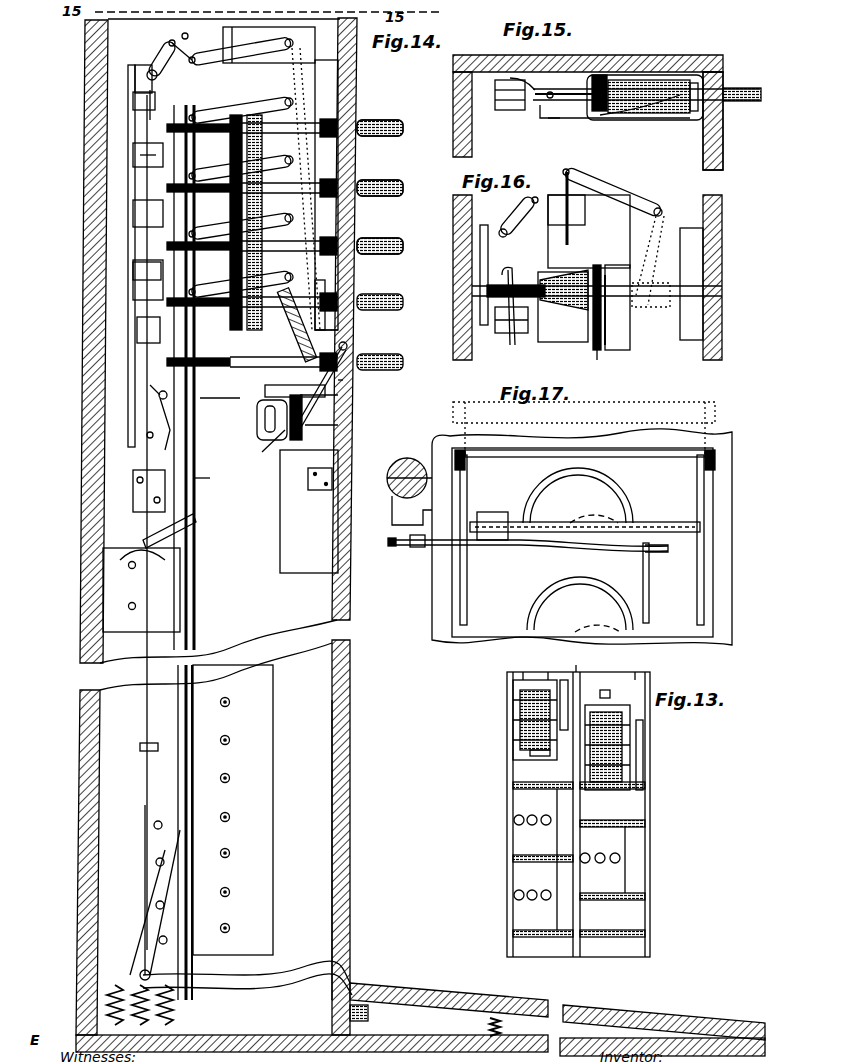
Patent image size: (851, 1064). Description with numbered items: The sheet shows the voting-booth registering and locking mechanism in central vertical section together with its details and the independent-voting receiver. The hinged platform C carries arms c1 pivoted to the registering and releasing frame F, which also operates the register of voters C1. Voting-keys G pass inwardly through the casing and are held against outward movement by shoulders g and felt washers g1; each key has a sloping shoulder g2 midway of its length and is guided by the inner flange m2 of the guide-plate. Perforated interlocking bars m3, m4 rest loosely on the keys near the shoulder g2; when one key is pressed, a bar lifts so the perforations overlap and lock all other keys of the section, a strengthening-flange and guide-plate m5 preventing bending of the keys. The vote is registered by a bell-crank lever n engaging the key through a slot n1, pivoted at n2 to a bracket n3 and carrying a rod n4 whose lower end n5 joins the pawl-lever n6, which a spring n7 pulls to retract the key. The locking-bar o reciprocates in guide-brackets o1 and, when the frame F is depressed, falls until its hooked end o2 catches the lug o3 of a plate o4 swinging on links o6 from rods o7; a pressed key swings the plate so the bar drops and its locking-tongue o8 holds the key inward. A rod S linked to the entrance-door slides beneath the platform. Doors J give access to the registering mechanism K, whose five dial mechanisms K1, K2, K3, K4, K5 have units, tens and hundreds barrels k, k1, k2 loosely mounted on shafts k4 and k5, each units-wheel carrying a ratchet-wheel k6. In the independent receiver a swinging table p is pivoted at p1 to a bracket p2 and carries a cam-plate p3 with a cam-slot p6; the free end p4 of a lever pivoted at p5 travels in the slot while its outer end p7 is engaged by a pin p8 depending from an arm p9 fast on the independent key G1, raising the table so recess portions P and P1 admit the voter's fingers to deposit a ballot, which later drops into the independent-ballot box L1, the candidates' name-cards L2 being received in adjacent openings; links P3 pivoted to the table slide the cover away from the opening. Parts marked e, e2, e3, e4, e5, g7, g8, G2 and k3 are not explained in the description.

In FIG. 14, the locking-bar o is at (130, 195).
In FIG. 14, the guide-brackets o1 is at (133, 155).
In FIG. 14, the hooked upper end of locking-bar o2 is at (150, 398).
In FIG. 16, the hooked upper end of locking-bar o2 is at (520, 280).
In FIG. 14, the lug of plate o3 is at (133, 100).
In FIG. 14, the plate o4 is at (130, 275).
In FIG. 15, the plate o4 is at (493, 95).
In FIG. 16, the plate o4 is at (480, 258).
In FIG. 14, the links o6 is at (158, 60).
In FIG. 15, the links o6 is at (512, 75).
In FIG. 16, the links o6 is at (511, 216).
In FIG. 14, the rods o7 is at (185, 38).
In FIG. 14, the locking-tongue o8 is at (162, 421).
In FIG. 14, the bell-crank lever n is at (241, 167).
In FIG. 16, the bell-crank lever n is at (612, 191).
In FIG. 14, the slot n1 is at (296, 343).
In FIG. 15, the slot n1 is at (700, 90).
In FIG. 14, the pivot of bell-crank lever n2 is at (306, 180).
In FIG. 16, the pivot of bell-crank lever n2 is at (662, 205).
In FIG. 14, the bracket n3 is at (345, 285).
In FIG. 15, the bracket n3 is at (680, 122).
In FIG. 16, the bracket n3 is at (595, 355).
In FIG. 14, the rod n4 is at (222, 438).
In FIG. 16, the rod n4 is at (568, 240).
In FIG. 14, the lower end of rod n5 is at (219, 402).
In FIG. 14, the pawl-lever n6 is at (140, 858).
In FIG. 14, the spring n7 is at (128, 972).
In FIG. 14, the inner flange m2 is at (242, 105).
In FIG. 14, the interlocking bar m3 is at (197, 377).
In FIG. 16, the interlocking bar m4 is at (610, 345).
In FIG. 16, the strengthening-flange and guide-plate m5 is at (630, 318).
In FIG. 14, the shoulders g is at (358, 110).
In FIG. 15, the shoulders g is at (646, 68).
In FIG. 14, the washers g1 is at (358, 165).
In FIG. 15, the washers g1 is at (744, 75).
In FIG. 15, the sloping shoulder g2 is at (625, 88).
In FIG. 14, the block g7 is at (368, 1017).
In FIG. 15, the hook g8 is at (545, 110).
In FIG. 16, the hook g8 is at (505, 272).
In FIG. 14, the voting-keys G is at (395, 118).
In FIG. 15, the voting-keys G is at (736, 119).
In FIG. 17, the independent voting-key G1 is at (405, 458).
In FIG. 14, the rod G2 is at (395, 365).
In FIG. 14, the independent-ballot box L1 is at (309, 511).
In FIG. 14, the candidates' name-cards L2 is at (352, 70).
In FIG. 14, the registering and releasing frame F is at (147, 458).
In FIG. 14, the platform C is at (610, 1008).
In FIG. 14, the register of voters C1 is at (141, 590).
In FIG. 14, the arms c1 is at (352, 975).
In FIG. 14, the spring e is at (488, 1026).
In FIG. 14, the pin e2 is at (145, 826).
In FIG. 14, the clip e3 is at (140, 748).
In FIG. 14, the lever e4 is at (196, 525).
In FIG. 14, the bracket e5 is at (150, 535).
In FIG. 14, the registering mechanism K is at (230, 778).
In FIG. 13, the registering apparatus K1 is at (507, 700).
In FIG. 13, the registering apparatus K2 is at (645, 740).
In FIG. 13, the registering apparatus K3 is at (513, 805).
In FIG. 13, the registering apparatus K4 is at (615, 838).
In FIG. 13, the registering apparatus K5 is at (513, 878).
In FIG. 13, the units registering wheel k is at (579, 659).
In FIG. 13, the tens registering wheel k1 is at (555, 663).
In FIG. 13, the hundreds registering wheel k2 is at (567, 663).
In FIG. 13, the contact k3 is at (637, 663).
In FIG. 13, the shaft k4 is at (609, 687).
In FIG. 13, the shaft k5 is at (540, 761).
In FIG. 13, the ratchet-wheel k6 is at (640, 680).
In FIG. 14, the doors J is at (350, 825).
In FIG. 14, the rod S is at (340, 1013).
In FIG. 14, the swinging table p is at (319, 395).
In FIG. 17, the swinging table p is at (585, 540).
In FIG. 14, the pivot of table p1 is at (319, 399).
In FIG. 17, the pivot of table p1 is at (513, 555).
In FIG. 14, the bracket p2 is at (343, 405).
In FIG. 17, the bracket p2 is at (715, 413).
In FIG. 14, the cam-plate p3 is at (321, 417).
In FIG. 17, the cam-plate p3 is at (649, 575).
In FIG. 14, the free end of lever p4 is at (262, 410).
In FIG. 17, the free end of lever p4 is at (659, 542).
In FIG. 14, the lever pivot p5 is at (258, 420).
In FIG. 17, the lever pivot p5 is at (490, 545).
In FIG. 14, the cam-slot p6 is at (259, 445).
In FIG. 17, the outer end of lever p7 is at (392, 542).
In FIG. 17, the pin p8 is at (410, 553).
In FIG. 17, the arm p9 is at (392, 510).
In FIG. 17, the portion of hemispherical recess P is at (578, 495).
In FIG. 14, the portion of hemispherical recess P1 is at (287, 382).
In FIG. 17, the portion of hemispherical recess P1 is at (580, 604).
In FIG. 17, the links P3 is at (460, 605).